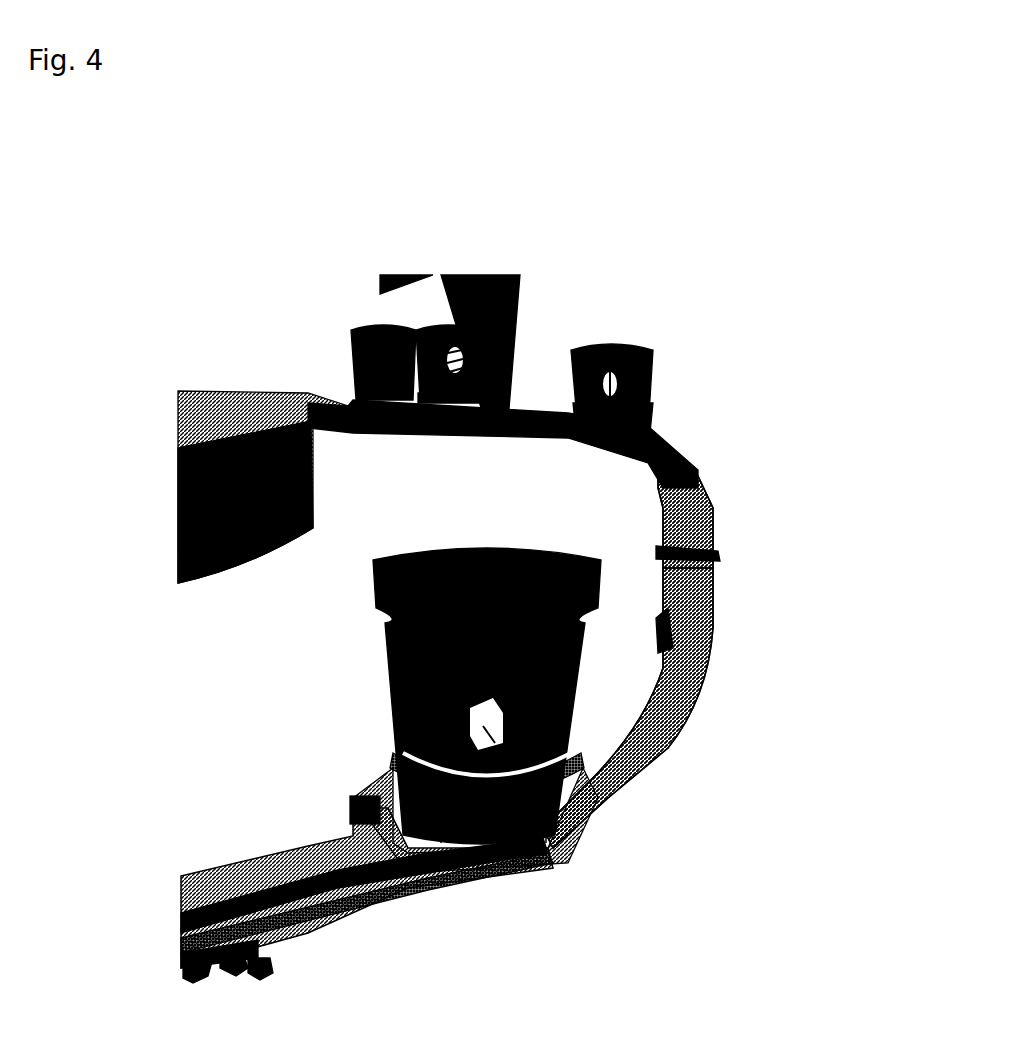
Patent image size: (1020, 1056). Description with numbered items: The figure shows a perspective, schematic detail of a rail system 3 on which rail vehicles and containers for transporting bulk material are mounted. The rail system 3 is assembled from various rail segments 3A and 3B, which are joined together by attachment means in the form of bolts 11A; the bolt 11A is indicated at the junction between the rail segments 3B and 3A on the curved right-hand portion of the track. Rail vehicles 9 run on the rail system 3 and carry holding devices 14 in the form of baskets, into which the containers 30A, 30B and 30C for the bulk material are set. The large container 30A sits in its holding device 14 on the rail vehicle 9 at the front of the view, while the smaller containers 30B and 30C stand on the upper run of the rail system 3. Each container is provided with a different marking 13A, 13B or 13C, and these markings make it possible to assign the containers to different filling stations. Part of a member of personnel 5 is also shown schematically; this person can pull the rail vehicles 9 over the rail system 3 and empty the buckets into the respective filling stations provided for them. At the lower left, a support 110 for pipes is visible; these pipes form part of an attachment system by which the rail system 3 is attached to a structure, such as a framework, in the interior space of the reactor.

The rail system 3 is at (704, 505).
The rail segment 3A is at (667, 575).
The rail segment 3B is at (673, 467).
The member of personnel 5 is at (503, 280).
The rail vehicle 9 is at (410, 835).
The bolt 11A is at (670, 543).
The marking 13A is at (560, 783).
The marking 13B is at (565, 395).
The marking 13C is at (415, 390).
The holding device 14 is at (395, 745).
The container 30A is at (573, 710).
The container 30B is at (607, 338).
The container 30C is at (350, 333).
The support 110 is at (250, 968).